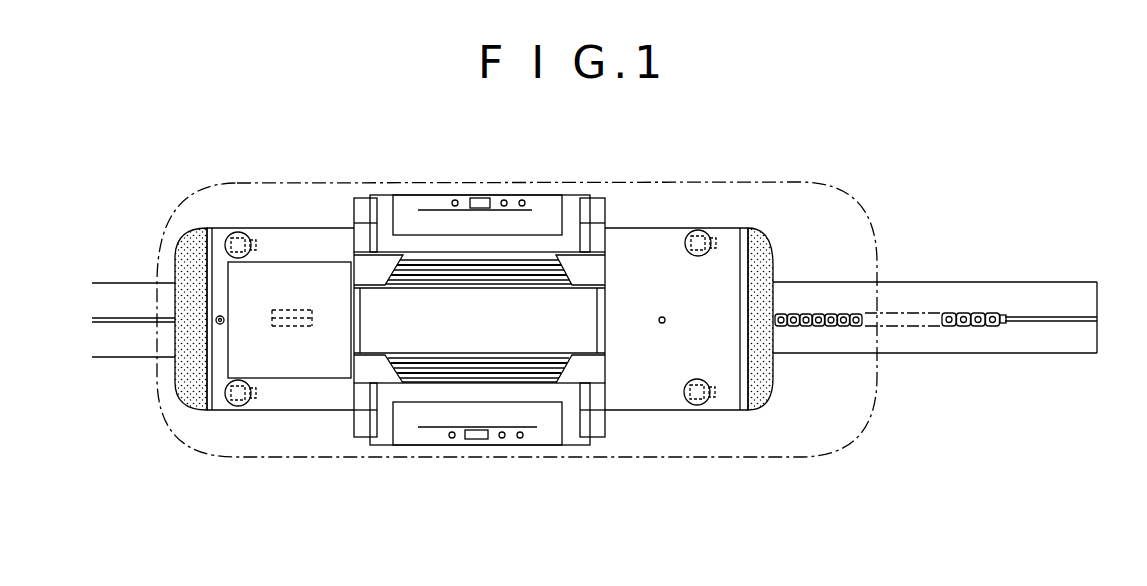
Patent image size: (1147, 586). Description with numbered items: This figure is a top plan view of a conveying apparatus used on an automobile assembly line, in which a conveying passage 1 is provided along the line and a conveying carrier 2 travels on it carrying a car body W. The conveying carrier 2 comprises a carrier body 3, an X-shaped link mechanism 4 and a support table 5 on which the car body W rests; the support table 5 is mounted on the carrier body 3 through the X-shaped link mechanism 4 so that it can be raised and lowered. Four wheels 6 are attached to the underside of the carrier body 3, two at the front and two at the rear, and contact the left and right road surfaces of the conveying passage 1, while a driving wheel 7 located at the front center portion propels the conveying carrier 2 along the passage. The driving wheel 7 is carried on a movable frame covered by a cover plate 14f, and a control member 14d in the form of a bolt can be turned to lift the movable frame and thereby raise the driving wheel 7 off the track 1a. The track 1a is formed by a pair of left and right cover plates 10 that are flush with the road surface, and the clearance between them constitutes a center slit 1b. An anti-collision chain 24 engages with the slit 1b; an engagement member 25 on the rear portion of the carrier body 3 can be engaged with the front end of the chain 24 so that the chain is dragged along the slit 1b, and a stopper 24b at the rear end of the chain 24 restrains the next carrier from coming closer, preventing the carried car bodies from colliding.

The conveying passage 1 is at (941, 257).
The track 1a is at (1100, 283).
The center slit 1b is at (1033, 322).
The conveying carrier 2 is at (707, 225).
The carrier body 3 is at (657, 228).
The X-shaped link mechanism 4 is at (440, 277).
The support table 5 is at (381, 277).
The wheels 6 is at (260, 240).
The driving wheel 7 is at (298, 330).
The cover plates 10 is at (1057, 333).
The control member 14d is at (226, 318).
The cover plate 14f is at (322, 372).
The anti-collision chain 24 is at (970, 327).
The stopper 24b is at (1002, 313).
The engagement member 25 is at (666, 316).
The car body W is at (702, 448).